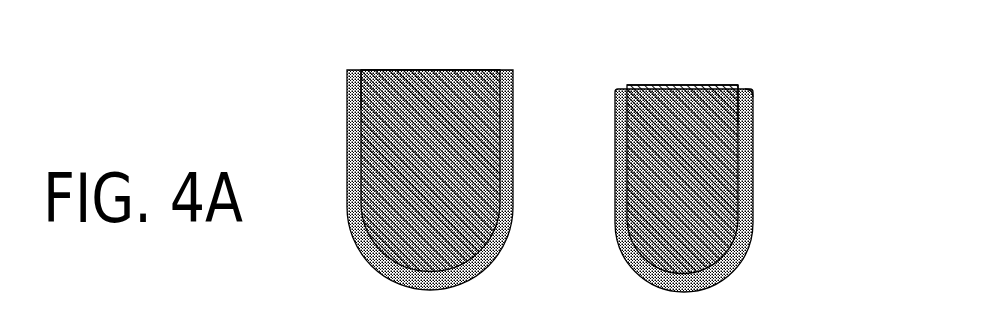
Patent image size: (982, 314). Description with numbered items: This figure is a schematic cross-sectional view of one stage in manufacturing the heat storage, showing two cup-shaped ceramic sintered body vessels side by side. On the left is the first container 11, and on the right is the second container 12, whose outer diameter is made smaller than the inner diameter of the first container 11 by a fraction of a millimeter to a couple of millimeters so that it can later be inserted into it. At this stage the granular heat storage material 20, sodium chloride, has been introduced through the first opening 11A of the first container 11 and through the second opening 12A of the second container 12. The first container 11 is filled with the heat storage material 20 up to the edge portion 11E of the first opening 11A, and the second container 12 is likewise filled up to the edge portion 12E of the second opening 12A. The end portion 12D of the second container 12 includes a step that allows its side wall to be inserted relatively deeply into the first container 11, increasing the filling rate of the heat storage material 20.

The first container 11 is at (347, 170).
The edge portion of the first opening 11E is at (362, 69).
The first opening 11A is at (415, 69).
The second container 12 is at (615, 197).
The second opening 12A is at (677, 84).
The edge portion of the second opening 12E is at (742, 83).
The end portion of the second container 12D is at (753, 88).
The heat storage material 20 is at (347, 186).